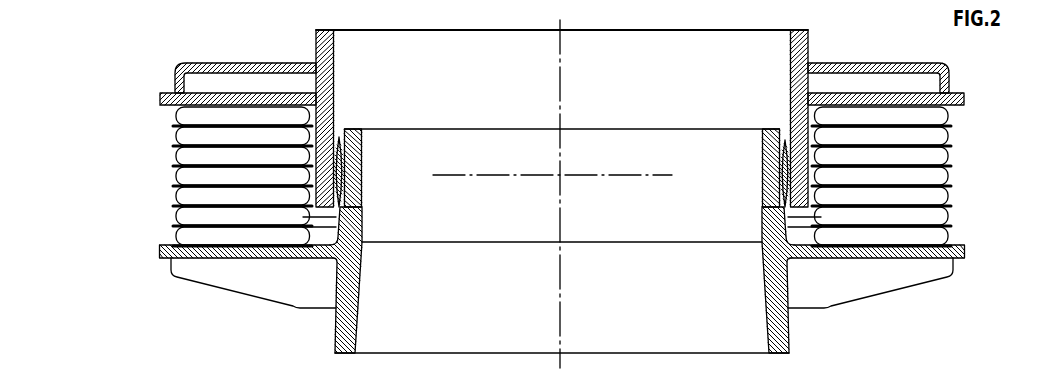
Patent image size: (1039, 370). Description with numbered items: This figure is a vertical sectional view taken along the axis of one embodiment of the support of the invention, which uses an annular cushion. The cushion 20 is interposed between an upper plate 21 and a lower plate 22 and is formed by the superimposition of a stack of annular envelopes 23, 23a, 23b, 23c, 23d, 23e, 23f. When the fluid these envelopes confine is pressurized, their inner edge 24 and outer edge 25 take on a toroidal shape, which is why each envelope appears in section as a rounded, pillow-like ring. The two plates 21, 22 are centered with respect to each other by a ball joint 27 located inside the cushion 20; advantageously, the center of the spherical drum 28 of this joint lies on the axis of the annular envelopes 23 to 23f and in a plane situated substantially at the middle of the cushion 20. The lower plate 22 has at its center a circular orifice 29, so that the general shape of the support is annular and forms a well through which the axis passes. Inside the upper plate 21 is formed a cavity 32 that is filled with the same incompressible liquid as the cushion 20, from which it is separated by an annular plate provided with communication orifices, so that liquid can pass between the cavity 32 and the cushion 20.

The cushion 20 is at (950, 156).
The plate 21 is at (960, 98).
The plate 22 is at (960, 250).
The annular envelope 23 is at (193, 117).
The annular envelope 23a is at (190, 138).
The annular envelope 23b is at (192, 158).
The annular envelope 23c is at (197, 177).
The annular envelope 23d is at (193, 195).
The annular envelope 23e is at (193, 213).
The annular envelope 23f is at (192, 232).
The inner edge 24 is at (783, 212).
The outer edge 25 is at (947, 215).
The ball joint 27 is at (780, 165).
The spherical drum 28 is at (335, 196).
The circular orifice 29 is at (513, 150).
The cavity 32 is at (930, 78).